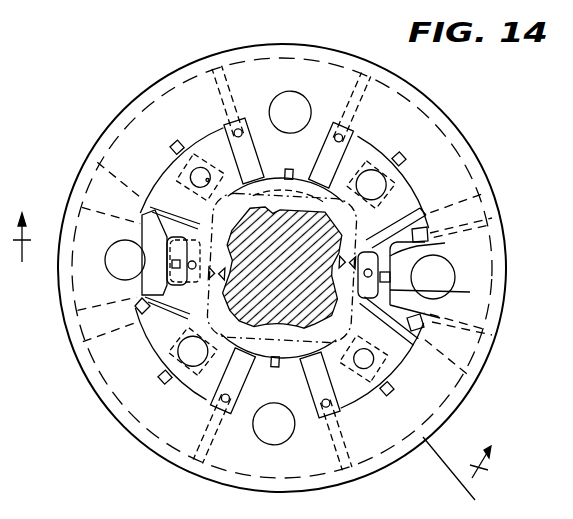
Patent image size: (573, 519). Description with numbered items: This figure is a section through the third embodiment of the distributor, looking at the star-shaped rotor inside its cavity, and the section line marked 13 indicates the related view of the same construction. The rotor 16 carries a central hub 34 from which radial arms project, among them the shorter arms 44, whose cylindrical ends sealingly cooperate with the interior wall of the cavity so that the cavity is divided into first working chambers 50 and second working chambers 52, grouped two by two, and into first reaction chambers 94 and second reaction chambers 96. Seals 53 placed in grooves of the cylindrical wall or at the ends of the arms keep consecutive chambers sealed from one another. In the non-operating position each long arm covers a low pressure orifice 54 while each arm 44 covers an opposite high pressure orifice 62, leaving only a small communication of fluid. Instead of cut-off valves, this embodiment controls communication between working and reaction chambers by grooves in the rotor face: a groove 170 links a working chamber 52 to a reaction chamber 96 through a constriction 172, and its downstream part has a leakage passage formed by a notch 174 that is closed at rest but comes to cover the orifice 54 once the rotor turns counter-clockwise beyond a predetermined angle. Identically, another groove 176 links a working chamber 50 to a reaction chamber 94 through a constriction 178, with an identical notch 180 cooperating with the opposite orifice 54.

The section line of FIG. 13 is at (267, 340).
The hub body 16 is at (256, 318).
The bore 34 is at (282, 268).
The arms 44 is at (140, 292).
The working chambers 50 is at (432, 212).
The working chambers 52 is at (428, 306).
The seals 53 is at (404, 160).
The orifice 54 is at (381, 158).
The orifice 62 is at (200, 253).
The reaction chambers 94 is at (305, 393).
The reaction chambers 96 is at (357, 126).
The groove 170 is at (318, 204).
The constriction 172 is at (281, 267).
The notch 174 is at (204, 184).
The groove 176 is at (281, 268).
The constriction 178 is at (282, 250).
The notch 180 is at (333, 405).